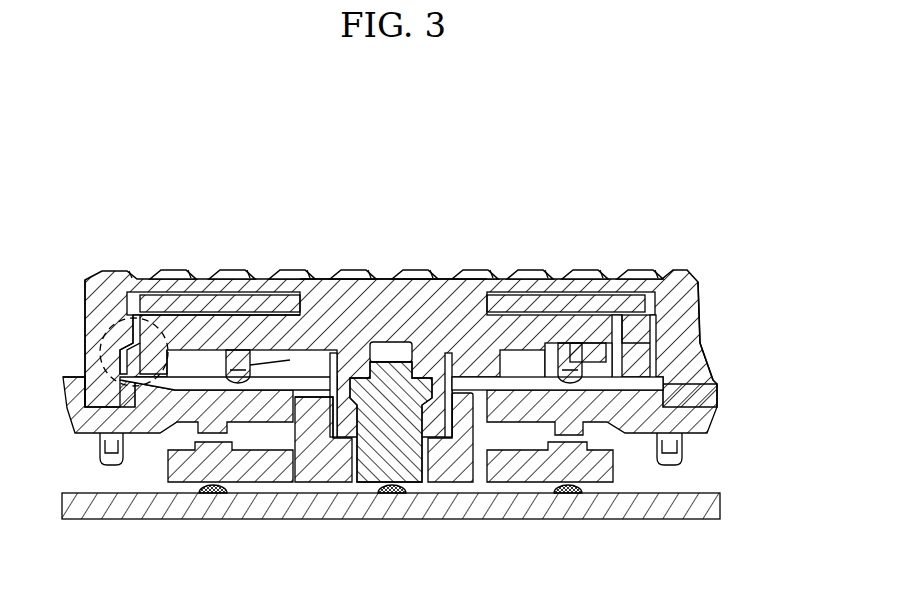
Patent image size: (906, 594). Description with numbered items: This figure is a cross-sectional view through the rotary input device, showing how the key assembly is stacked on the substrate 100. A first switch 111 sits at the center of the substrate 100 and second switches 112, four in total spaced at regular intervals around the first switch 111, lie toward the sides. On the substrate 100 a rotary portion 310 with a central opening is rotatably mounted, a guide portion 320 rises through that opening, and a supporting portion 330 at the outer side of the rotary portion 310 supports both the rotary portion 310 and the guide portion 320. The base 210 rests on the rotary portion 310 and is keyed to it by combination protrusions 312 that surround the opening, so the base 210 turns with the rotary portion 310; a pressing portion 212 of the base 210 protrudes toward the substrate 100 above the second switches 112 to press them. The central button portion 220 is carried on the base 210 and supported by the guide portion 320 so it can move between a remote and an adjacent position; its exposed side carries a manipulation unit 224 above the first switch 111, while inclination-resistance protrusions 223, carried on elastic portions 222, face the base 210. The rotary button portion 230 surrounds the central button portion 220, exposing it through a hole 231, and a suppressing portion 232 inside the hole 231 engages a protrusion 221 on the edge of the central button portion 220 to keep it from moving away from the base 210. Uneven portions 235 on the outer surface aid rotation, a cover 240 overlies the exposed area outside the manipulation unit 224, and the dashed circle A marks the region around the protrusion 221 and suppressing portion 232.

The substrate 100 is at (713, 507).
The first switch 111 is at (388, 497).
The second switches 112 is at (210, 497).
The base 210 is at (706, 424).
The pressing portion 212 is at (613, 462).
The central button portion 220 is at (434, 312).
The protrusion 221 is at (70, 378).
The elastic portions 222 is at (290, 360).
The inclination-resistance protrusions 223 is at (240, 348).
The manipulation unit 224 is at (388, 302).
The rotary button portion 230 is at (697, 338).
The hole 231 is at (637, 323).
The suppressing portion 232 is at (133, 325).
The uneven portions 235 is at (641, 292).
The cover 240 is at (176, 295).
The rotary portion 310 is at (318, 473).
The combination protrusions 312 is at (307, 432).
The guide portion 320 is at (410, 470).
The supporting portion 330 is at (167, 471).
The detail region A is at (107, 358).